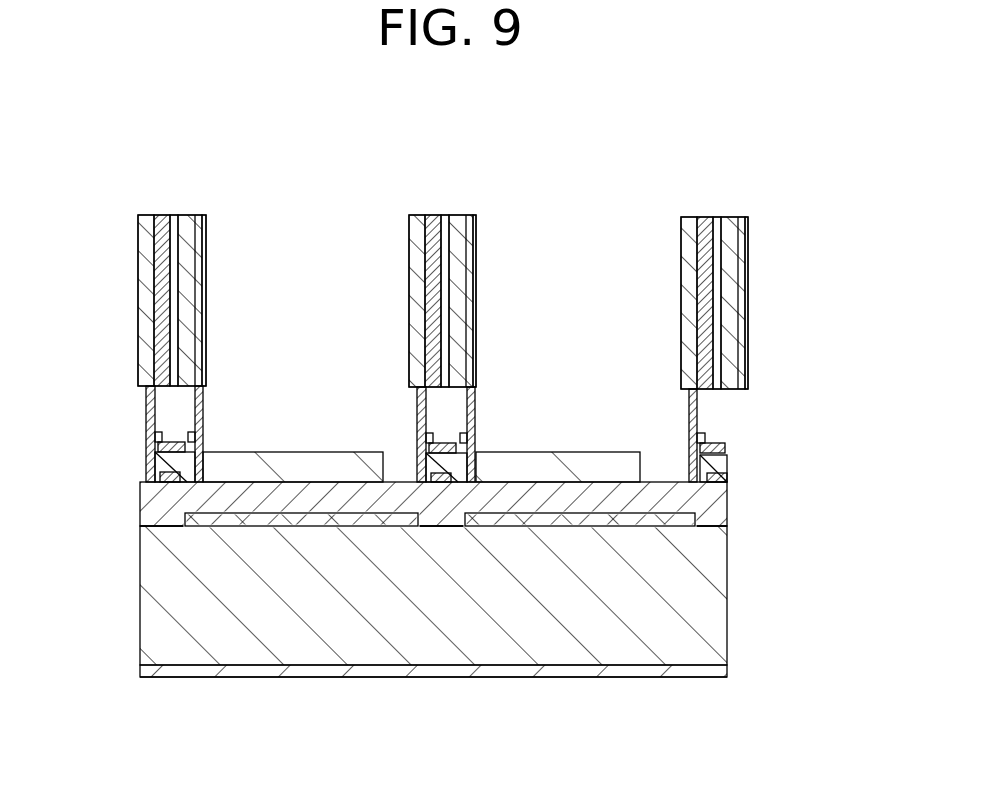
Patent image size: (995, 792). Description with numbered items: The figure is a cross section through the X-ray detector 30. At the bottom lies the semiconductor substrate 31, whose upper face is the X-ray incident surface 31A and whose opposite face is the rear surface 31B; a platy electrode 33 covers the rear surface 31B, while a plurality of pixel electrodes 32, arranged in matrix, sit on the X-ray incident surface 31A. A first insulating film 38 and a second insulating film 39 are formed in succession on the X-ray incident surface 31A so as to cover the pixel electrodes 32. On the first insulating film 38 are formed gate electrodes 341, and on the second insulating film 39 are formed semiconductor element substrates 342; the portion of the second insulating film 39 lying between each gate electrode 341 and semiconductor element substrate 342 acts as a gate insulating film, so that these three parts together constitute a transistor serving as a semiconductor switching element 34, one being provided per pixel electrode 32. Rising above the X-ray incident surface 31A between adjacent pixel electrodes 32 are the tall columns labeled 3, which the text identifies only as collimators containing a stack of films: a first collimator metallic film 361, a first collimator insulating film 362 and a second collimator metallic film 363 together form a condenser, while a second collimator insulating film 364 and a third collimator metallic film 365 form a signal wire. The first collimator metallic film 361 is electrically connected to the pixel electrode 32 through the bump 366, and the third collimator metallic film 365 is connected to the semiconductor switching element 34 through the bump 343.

The X-ray detector 30 is at (804, 238).
The piezoelectric element / vibrating arm 3 is at (137, 327).
The semiconductor substrate 31 is at (726, 612).
The X-ray incident surface 31A is at (142, 524).
The rear surface 31B is at (140, 677).
The pixel electrode 32 is at (693, 522).
The platy electrode 33 is at (548, 678).
The semiconductor switching element 34 is at (735, 427).
The gate electrode 341 is at (725, 477).
The semiconductor element substrate 342 is at (727, 448).
The bump 343 is at (147, 430).
The first insulating film 38 is at (720, 500).
The second insulating film 39 is at (545, 455).
The first collimator metallic film 361 is at (203, 243).
The first collimator insulating film 362 is at (188, 215).
The second collimator metallic film 363 is at (172, 215).
The second collimator insulating film 364 is at (161, 215).
The third collimator metallic film 365 is at (145, 262).
The bump 366 is at (205, 436).